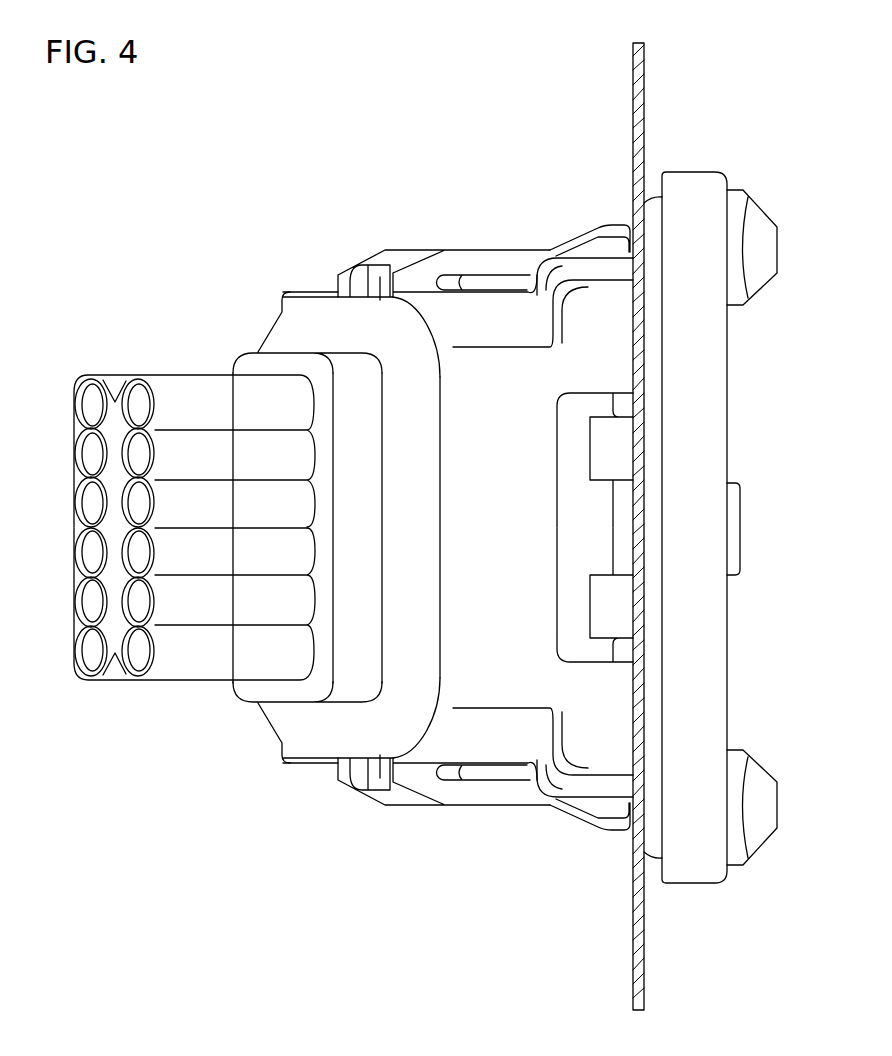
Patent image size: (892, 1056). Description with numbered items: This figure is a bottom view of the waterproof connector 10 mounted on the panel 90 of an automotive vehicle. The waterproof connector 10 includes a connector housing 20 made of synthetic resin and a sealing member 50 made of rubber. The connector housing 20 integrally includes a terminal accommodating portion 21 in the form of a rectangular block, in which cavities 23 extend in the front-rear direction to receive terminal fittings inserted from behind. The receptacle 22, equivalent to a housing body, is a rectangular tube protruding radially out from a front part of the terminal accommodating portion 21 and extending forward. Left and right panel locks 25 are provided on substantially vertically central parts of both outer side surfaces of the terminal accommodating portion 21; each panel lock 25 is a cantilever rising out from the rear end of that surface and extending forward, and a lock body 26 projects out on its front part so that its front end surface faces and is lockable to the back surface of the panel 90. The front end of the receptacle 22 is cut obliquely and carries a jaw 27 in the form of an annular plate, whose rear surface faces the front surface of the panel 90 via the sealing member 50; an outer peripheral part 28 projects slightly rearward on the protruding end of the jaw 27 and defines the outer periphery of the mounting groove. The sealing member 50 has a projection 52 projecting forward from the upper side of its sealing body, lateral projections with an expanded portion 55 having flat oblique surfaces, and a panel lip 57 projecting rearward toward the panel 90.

The waterproof connector 10 is at (348, 181).
The connector housing 20 is at (258, 350).
The terminal accommodating portion 21 is at (192, 383).
The receptacle 22 is at (290, 292).
The cavities 23 is at (140, 455).
The panel locks 25 is at (457, 258).
The lock body 26 is at (600, 237).
The jaw 27 is at (712, 172).
The outer peripheral part 28 is at (675, 183).
The sealing member 50 is at (650, 858).
The projection 52 is at (736, 523).
The expanded portion 55 is at (777, 247).
The panel lip 57 is at (653, 447).
The panel 90 is at (633, 72).